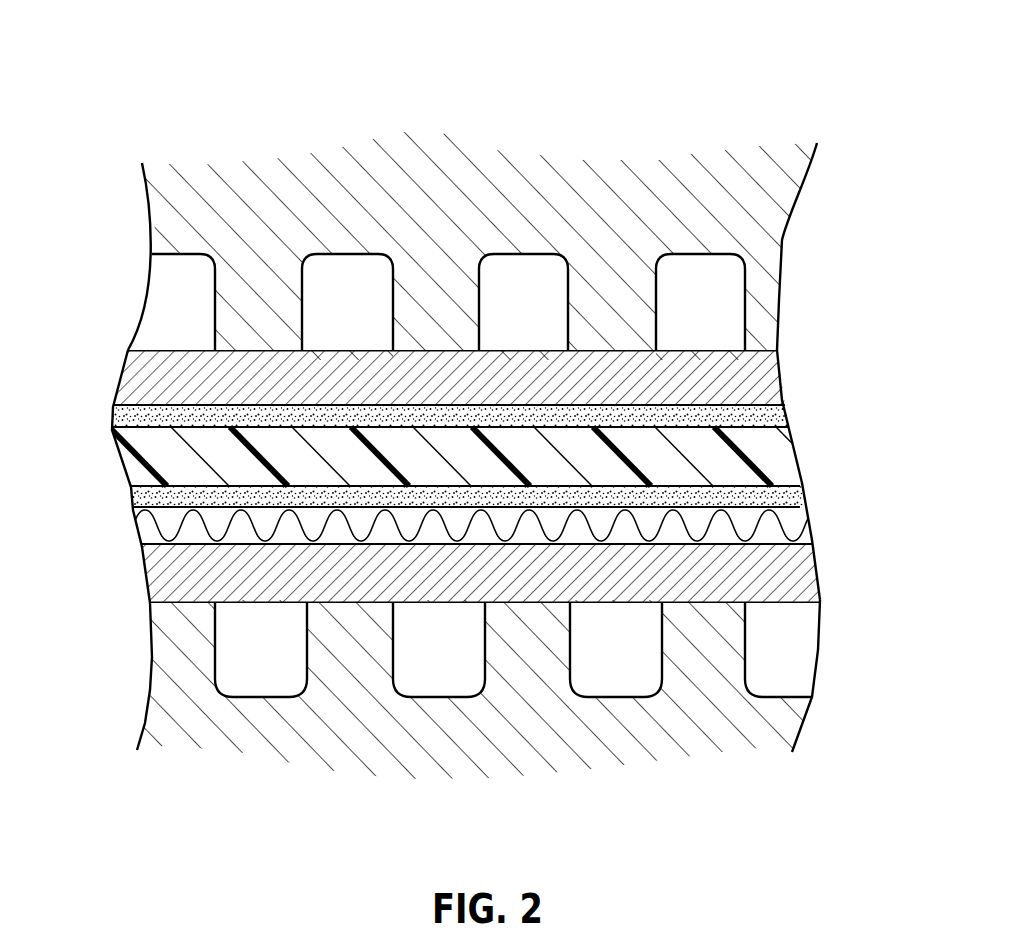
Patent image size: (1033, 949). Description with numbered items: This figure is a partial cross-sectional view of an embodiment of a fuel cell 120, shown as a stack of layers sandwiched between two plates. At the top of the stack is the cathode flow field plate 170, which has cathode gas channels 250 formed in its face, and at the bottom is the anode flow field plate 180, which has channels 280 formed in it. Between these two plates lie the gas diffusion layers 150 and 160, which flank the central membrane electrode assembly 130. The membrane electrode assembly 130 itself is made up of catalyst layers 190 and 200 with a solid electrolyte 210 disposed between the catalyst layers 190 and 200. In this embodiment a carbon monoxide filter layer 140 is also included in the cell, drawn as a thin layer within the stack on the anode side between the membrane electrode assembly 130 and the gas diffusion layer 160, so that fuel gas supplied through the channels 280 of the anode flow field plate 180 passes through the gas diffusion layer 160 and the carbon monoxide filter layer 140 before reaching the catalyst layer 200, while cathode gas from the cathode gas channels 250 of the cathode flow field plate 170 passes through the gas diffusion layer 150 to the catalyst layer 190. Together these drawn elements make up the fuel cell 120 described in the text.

The fuel cell 120 is at (637, 87).
The membrane electrode assembly 130 is at (107, 410).
The carbon monoxide filter layer 140 is at (790, 530).
The gas diffusion layer 150 is at (755, 367).
The gas diffusion layer 160 is at (787, 575).
The cathode flow field plate 170 is at (433, 168).
The anode flow field plate 180 is at (385, 738).
The catalyst layer 190 is at (770, 413).
The catalyst layer 200 is at (788, 493).
The solid electrolyte 210 is at (775, 453).
The cathode gas channels 250 is at (163, 300).
The channels 280 is at (233, 648).